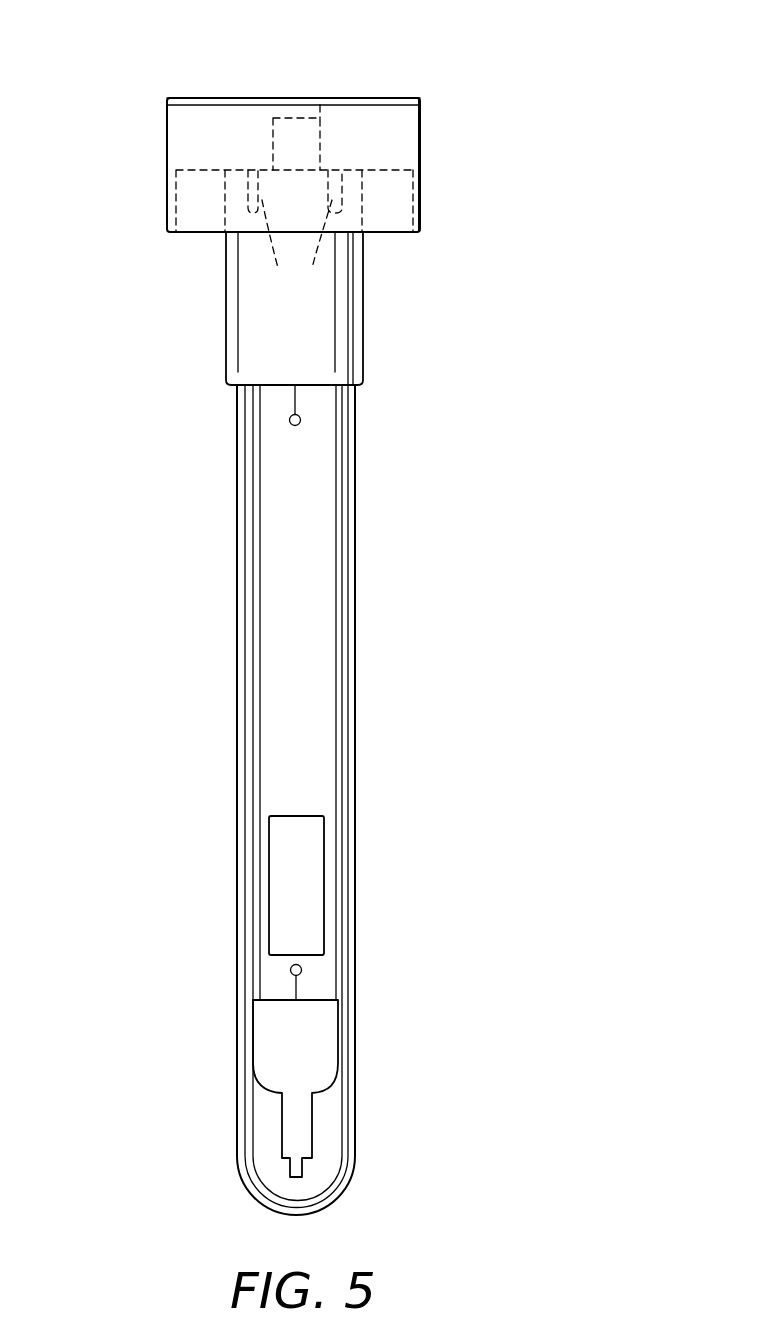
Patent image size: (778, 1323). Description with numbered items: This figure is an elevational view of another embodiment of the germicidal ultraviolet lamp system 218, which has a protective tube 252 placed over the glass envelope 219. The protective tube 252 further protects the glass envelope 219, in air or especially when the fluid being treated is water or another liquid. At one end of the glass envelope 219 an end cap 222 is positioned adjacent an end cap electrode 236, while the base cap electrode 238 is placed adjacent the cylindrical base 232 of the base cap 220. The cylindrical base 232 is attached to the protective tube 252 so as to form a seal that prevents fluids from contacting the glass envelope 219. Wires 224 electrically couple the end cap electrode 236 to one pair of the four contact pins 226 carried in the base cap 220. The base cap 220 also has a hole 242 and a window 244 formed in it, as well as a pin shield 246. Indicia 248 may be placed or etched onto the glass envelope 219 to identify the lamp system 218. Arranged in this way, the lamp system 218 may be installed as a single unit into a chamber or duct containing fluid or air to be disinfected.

The lamp system 218 is at (372, 446).
The glass envelope 219 is at (325, 735).
The base cap 220 is at (458, 126).
The end cap 222 is at (273, 1052).
The wires 224 is at (258, 645).
The contact pins 226 is at (297, 249).
The cylindrical base 232 is at (365, 278).
The end cap electrode 236 is at (290, 970).
The base cap electrode 238 is at (289, 421).
The hole 242 is at (322, 147).
The window 244 is at (307, 98).
The pin shield 246 is at (167, 198).
The indicia 248 is at (304, 877).
The protective tube 252 is at (355, 948).